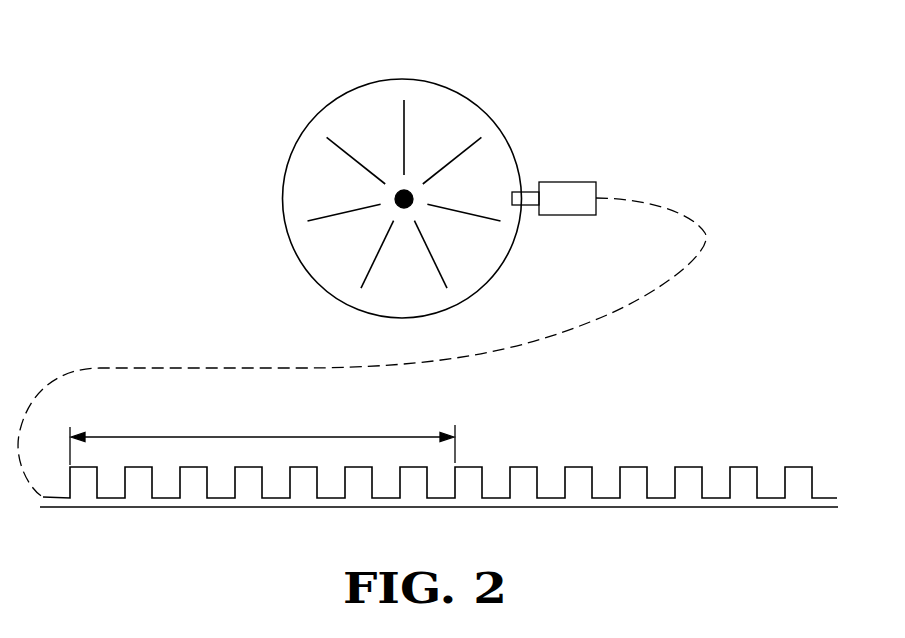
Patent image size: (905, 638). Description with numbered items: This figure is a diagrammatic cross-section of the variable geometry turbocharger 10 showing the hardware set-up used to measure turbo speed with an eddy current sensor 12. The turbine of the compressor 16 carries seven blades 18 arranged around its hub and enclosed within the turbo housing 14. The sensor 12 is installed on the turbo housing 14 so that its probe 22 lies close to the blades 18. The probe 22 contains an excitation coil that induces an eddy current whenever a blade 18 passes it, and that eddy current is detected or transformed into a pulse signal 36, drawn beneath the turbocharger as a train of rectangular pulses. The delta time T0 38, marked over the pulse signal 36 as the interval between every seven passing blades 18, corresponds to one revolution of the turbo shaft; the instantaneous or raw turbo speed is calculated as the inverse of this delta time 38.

The variable geometry turbocharger 10 is at (330, 74).
The eddy current sensor 12 is at (558, 182).
The turbo housing 14 is at (445, 88).
The compressor 16 is at (370, 130).
The blades 18 is at (478, 217).
The probe 22 is at (519, 216).
The pulse signal 36 is at (718, 231).
The delta time T0 38 is at (380, 436).